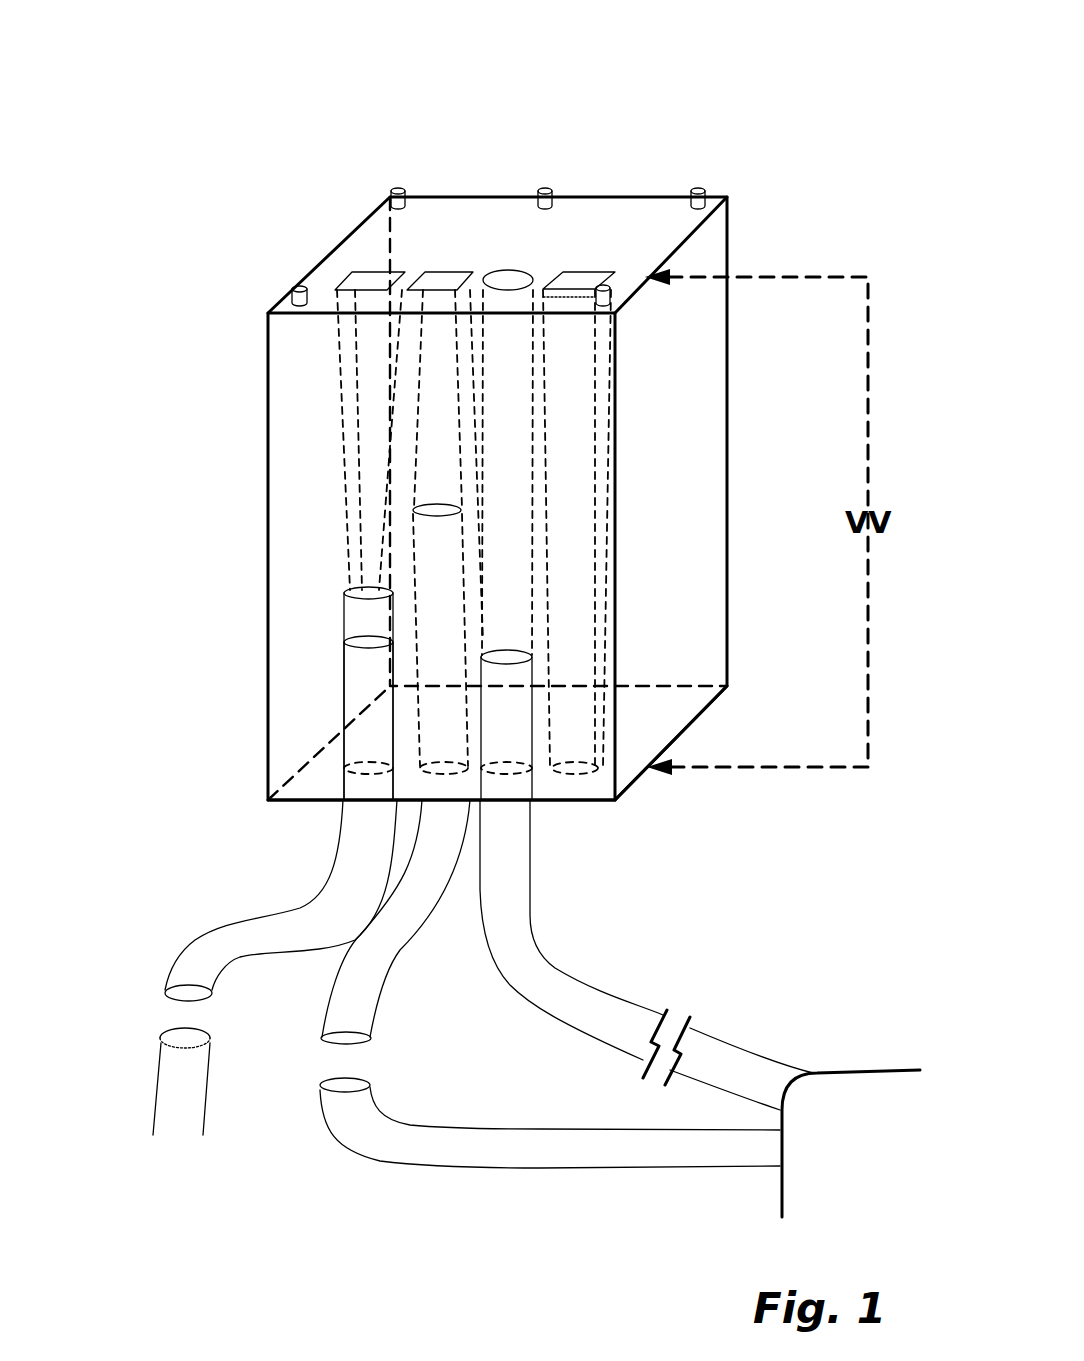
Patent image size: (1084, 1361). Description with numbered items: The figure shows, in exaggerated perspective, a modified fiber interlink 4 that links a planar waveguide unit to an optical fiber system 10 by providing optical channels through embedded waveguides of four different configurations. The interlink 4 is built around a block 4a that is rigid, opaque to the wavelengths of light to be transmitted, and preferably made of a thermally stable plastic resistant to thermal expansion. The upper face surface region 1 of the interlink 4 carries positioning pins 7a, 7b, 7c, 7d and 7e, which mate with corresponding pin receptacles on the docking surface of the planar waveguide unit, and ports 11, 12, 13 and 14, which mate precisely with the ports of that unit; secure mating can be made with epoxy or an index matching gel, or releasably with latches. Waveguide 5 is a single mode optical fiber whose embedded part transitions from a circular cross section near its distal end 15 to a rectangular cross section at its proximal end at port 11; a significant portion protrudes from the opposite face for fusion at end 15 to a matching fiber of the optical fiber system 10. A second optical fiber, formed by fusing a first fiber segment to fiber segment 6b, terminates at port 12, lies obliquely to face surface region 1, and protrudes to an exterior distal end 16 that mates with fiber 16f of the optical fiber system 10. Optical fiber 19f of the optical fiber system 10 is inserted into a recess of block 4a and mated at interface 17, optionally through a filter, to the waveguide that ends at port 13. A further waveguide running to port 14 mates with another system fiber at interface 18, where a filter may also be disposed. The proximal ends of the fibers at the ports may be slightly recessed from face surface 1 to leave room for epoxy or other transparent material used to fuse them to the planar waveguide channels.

The face surface region 1 is at (462, 227).
The positioning pin 7a is at (293, 287).
The positioning pin 7b is at (398, 187).
The positioning pin 7c is at (545, 187).
The positioning pin 7d is at (698, 187).
The positioning pin 7e is at (610, 297).
The port 11 is at (363, 278).
The port 12 is at (437, 277).
The port 13 is at (517, 280).
The port 14 is at (577, 278).
The interlink 4 is at (312, 637).
The block 4a is at (312, 695).
The waveguide 5 is at (362, 862).
The interface 17 is at (507, 657).
The interface 18 is at (590, 775).
The distal end 15 is at (185, 995).
The fiber segment 6b is at (362, 988).
The distal end 16 is at (353, 1038).
The optical fiber 19f is at (585, 1002).
The optical fiber 16f is at (638, 1161).
The optical fiber system 10 is at (851, 1161).